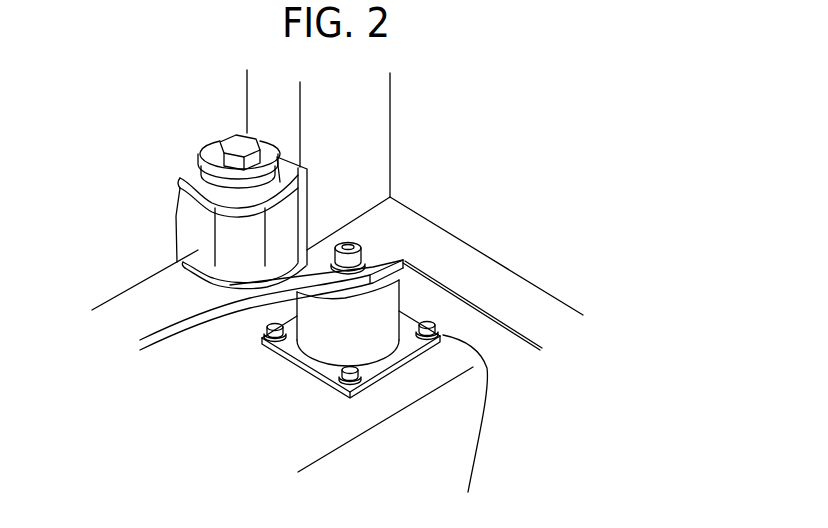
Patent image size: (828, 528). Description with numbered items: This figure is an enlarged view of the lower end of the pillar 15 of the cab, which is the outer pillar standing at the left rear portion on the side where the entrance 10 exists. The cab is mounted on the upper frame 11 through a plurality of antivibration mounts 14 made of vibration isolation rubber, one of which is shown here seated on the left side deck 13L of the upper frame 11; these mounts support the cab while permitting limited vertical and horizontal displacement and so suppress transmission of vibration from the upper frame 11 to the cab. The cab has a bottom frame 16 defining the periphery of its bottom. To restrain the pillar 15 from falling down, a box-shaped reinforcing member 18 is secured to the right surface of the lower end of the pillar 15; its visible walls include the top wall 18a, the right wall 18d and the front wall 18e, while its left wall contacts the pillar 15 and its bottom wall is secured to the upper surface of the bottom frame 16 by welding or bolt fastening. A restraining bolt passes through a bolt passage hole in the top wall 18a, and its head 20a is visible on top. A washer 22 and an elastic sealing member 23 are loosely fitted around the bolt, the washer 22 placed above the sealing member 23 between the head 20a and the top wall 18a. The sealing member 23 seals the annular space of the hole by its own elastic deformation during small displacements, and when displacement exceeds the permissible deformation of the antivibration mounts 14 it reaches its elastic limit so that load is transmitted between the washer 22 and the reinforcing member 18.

The entrance 10 is at (495, 137).
The upper frame 11 is at (449, 413).
The left side deck 13L is at (460, 443).
The antivibration mount 14 is at (408, 303).
The pillar 15 is at (390, 122).
The bottom frame 16 is at (138, 297).
The reinforcing member 18 is at (239, 240).
The top wall 18a is at (280, 180).
The right wall 18d is at (182, 265).
The front wall 18e is at (275, 237).
The head 20a is at (232, 143).
The washer 22 is at (208, 145).
The sealing member 23 is at (197, 172).